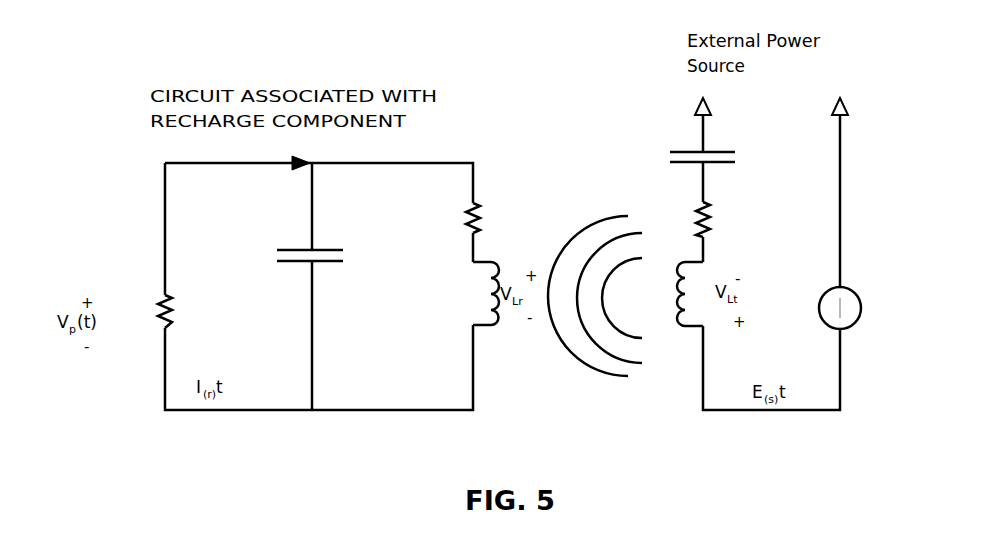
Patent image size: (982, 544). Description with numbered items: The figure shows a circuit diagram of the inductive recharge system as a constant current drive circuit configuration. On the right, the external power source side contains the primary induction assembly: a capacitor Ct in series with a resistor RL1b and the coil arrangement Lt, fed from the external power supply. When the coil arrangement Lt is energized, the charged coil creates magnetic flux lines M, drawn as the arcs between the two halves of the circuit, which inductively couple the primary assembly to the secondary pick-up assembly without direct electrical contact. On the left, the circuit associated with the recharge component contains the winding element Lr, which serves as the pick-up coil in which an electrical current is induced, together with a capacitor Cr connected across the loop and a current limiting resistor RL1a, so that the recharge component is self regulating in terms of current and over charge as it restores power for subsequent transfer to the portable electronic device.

The capacitor Cr is at (323, 286).
The current limiting resistor RL1a is at (183, 315).
The winding element Lr is at (478, 293).
The magnetic flux lines M is at (595, 288).
The capacitor Ct is at (687, 149).
The resistor RL1b is at (687, 219).
The coil arrangement Lt is at (677, 294).